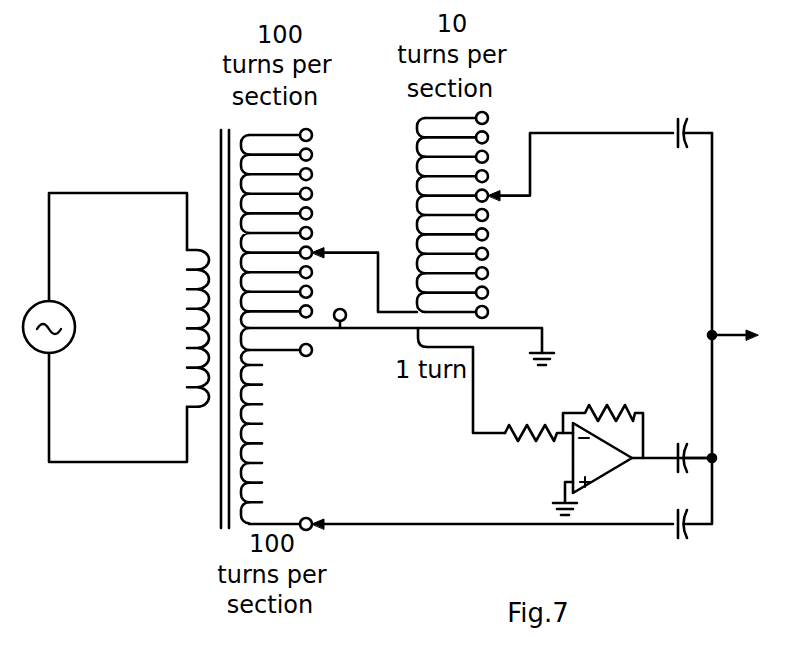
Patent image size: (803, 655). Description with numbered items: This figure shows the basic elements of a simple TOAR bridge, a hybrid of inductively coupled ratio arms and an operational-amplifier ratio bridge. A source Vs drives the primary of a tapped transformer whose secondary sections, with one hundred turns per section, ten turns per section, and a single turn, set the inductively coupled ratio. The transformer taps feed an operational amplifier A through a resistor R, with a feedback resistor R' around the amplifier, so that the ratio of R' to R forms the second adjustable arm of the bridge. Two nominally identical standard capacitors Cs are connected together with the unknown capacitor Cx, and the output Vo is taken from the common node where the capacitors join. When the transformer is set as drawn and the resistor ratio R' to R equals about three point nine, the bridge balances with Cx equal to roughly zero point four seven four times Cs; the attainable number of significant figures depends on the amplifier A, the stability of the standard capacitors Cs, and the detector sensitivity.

The AC source voltage Vs is at (105, 327).
The standard capacitor Cs is at (684, 280).
The unknown capacitor Cx is at (671, 511).
The output voltage Vo is at (733, 320).
The resistor R is at (537, 428).
The resistor R' is at (603, 419).
The operational amplifier A is at (632, 469).